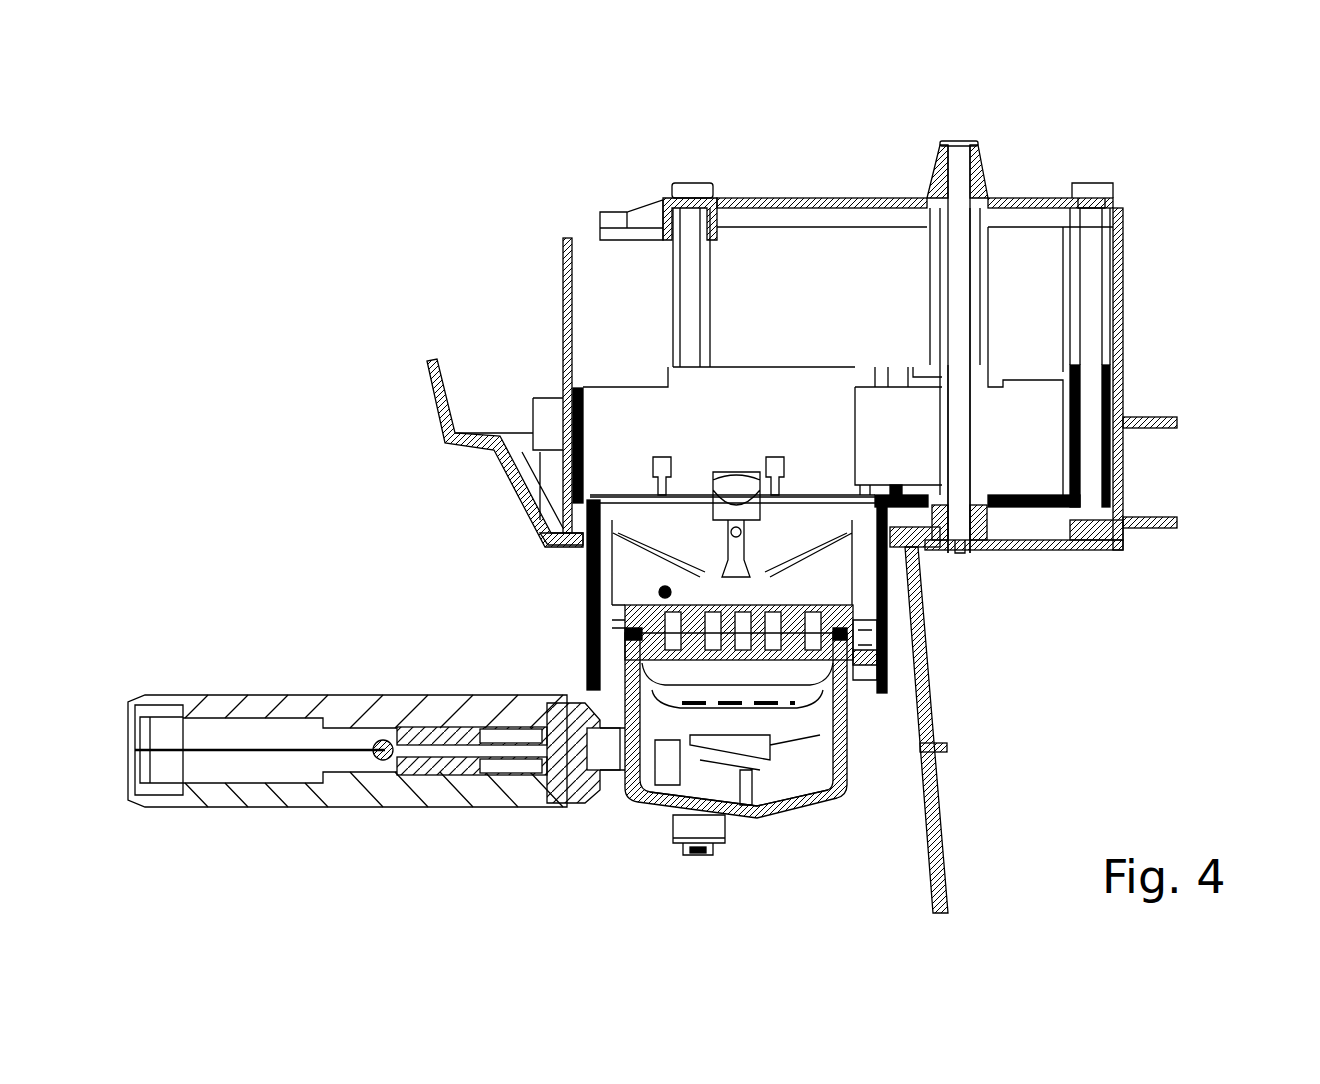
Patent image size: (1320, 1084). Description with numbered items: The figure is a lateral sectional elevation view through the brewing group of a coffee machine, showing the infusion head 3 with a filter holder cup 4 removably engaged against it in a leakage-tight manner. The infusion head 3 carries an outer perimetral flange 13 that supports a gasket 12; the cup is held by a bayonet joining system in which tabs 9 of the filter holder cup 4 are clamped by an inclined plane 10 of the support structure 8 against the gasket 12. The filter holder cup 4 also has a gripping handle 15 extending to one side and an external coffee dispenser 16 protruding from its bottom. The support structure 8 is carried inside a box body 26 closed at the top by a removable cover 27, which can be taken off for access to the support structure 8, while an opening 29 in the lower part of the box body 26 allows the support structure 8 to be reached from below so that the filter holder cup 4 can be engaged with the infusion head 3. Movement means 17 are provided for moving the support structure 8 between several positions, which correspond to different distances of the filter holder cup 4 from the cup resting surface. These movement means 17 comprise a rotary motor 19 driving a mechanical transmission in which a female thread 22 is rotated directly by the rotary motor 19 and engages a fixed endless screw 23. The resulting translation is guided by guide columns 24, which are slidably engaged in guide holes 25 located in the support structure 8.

The infusion head 3 is at (680, 708).
The filter holder cup 4 is at (651, 814).
The support structure 8 is at (771, 388).
The tabs 9 is at (888, 641).
The inclined plane 10 is at (864, 658).
The gasket 12 is at (638, 630).
The outer perimetral flange 13 is at (619, 611).
The gripping handle 15 is at (358, 698).
The external coffee dispenser 16 is at (708, 858).
The movement means 17 is at (1034, 360).
The rotary motor 19 is at (897, 413).
The female thread 22 is at (975, 453).
The endless screw 23 is at (960, 212).
The guide columns 24 is at (1093, 253).
The guide holes 25 is at (1111, 395).
The box body 26 is at (560, 295).
The removable cover 27 is at (1033, 195).
The opening 29 is at (580, 546).